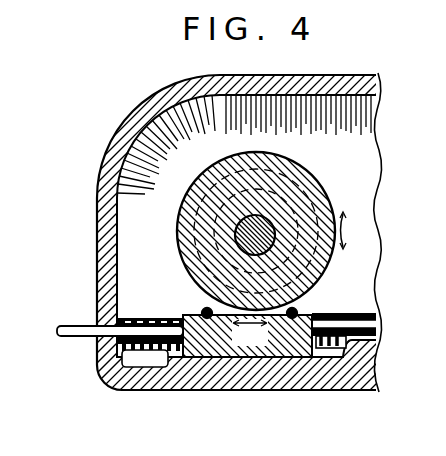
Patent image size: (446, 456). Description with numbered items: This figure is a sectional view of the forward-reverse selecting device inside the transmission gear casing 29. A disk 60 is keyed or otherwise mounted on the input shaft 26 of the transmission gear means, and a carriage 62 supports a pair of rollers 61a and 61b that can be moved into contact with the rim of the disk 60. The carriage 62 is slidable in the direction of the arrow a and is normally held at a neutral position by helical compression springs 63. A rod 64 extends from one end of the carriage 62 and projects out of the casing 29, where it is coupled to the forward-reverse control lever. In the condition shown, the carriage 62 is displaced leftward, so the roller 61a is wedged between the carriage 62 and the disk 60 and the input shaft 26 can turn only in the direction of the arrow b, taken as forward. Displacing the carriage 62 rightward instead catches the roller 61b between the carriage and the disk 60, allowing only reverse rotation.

The transmission gear casing 29 is at (138, 150).
The disk 60 is at (276, 181).
The input shaft 26 is at (236, 239).
The roller 61a is at (295, 311).
The roller 61b is at (204, 311).
The carriage 62 is at (272, 353).
The helical compression springs 63 is at (120, 370).
The rod 64 is at (80, 338).